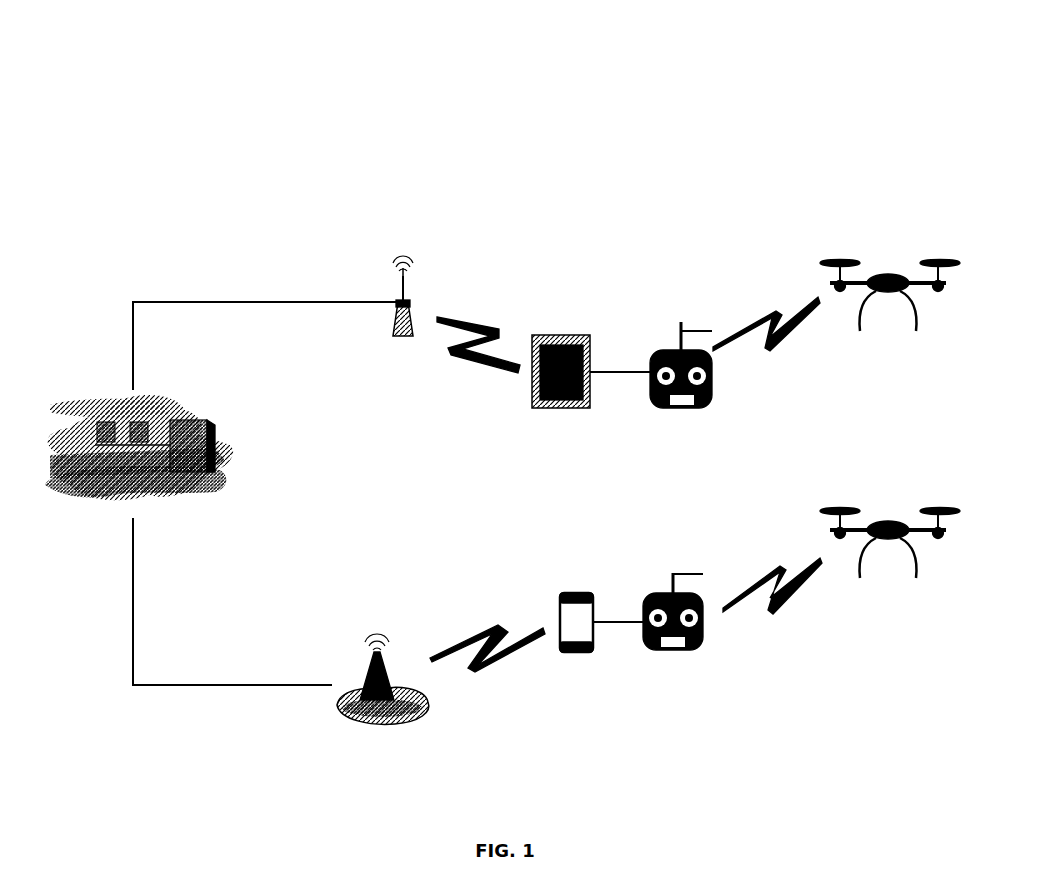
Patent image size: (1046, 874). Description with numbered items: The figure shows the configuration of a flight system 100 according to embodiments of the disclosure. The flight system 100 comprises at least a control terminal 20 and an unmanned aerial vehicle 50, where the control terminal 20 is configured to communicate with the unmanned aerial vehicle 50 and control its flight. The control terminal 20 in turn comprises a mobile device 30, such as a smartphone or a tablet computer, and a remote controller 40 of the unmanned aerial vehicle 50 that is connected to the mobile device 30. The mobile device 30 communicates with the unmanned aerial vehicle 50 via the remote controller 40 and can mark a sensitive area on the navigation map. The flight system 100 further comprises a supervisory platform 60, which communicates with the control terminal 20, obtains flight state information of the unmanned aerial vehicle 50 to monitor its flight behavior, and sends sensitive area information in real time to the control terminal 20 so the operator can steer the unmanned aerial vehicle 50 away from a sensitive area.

The flight system 100 is at (523, 47).
The control terminal 20 is at (750, 212).
The mobile device 30 is at (572, 337).
The remote controller 40 is at (682, 330).
The unmanned aerial vehicle 50 is at (887, 277).
The supervisory platform 60 is at (213, 453).